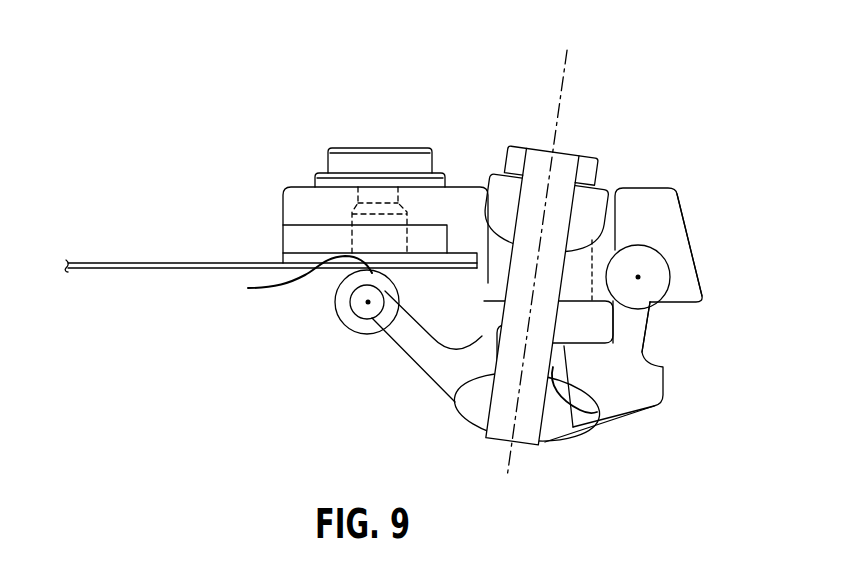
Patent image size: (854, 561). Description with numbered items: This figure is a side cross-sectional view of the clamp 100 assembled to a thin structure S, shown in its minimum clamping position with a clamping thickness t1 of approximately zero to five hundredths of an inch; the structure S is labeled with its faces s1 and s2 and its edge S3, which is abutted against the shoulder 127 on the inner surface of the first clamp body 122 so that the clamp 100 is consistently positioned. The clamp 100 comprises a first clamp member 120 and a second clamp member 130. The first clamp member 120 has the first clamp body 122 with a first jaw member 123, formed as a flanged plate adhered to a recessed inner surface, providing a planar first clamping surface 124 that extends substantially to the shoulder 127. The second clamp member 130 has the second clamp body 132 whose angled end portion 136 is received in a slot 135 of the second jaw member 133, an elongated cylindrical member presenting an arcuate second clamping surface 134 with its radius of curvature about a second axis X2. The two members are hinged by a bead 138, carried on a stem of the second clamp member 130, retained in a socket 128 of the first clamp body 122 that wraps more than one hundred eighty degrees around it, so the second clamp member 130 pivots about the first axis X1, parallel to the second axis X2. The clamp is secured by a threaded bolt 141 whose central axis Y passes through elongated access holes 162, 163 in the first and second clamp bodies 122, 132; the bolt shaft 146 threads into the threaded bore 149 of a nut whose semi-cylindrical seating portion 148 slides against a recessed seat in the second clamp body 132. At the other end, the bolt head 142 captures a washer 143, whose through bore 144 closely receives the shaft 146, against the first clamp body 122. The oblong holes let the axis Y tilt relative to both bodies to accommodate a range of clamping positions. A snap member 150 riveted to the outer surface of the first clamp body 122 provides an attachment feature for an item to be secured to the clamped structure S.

The clamp 100 is at (770, 104).
The structure S is at (78, 232).
The clamping thickness t1 is at (107, 280).
The first sheet surface s1 is at (175, 263).
The second sheet surface s2 is at (165, 268).
The edge S3 is at (490, 260).
The first clamp member 120 is at (280, 175).
The first jaw member 123 is at (297, 258).
The first clamping surface 124 is at (406, 266).
The snap member 150 is at (352, 148).
The shoulder 127 is at (490, 260).
The first clamp body 122 is at (643, 208).
The bead 138 is at (641, 256).
The first axis X1 is at (640, 277).
The socket 128 is at (662, 282).
The access hole 162 is at (603, 323).
The second clamp body 132 is at (637, 397).
The access hole 163 is at (596, 418).
The threaded bolt 141 is at (531, 122).
The bolt head 142 is at (588, 170).
The washer 143 is at (494, 203).
The through bore 144 is at (522, 212).
The central axis Y is at (566, 78).
The seating portion 148 is at (453, 413).
The threaded bore 149 is at (488, 398).
The bolt shaft 146 is at (526, 437).
The second clamp member 130 is at (399, 385).
The second jaw member 133 is at (340, 302).
The second axis X2 is at (366, 303).
The slot 135 is at (384, 318).
The end portion 136 is at (387, 323).
The second clamping surface 134 is at (250, 288).